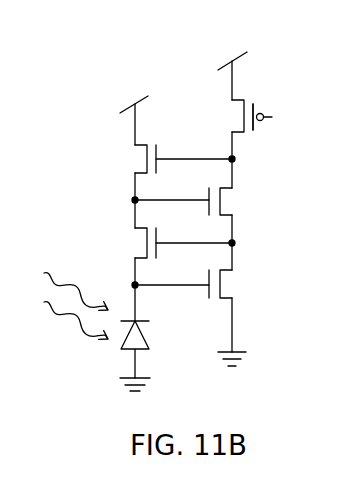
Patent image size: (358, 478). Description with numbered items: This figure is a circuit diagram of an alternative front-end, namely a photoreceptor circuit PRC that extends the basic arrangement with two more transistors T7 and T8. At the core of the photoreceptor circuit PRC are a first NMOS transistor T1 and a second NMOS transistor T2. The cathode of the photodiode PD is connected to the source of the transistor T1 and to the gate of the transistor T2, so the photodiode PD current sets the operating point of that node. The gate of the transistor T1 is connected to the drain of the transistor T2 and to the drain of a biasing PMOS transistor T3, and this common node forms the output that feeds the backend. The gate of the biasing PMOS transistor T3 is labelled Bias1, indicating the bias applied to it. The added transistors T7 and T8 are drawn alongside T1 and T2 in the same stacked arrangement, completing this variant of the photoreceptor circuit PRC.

The photoreceptor circuit PRC is at (122, 84).
The first NMOS transistor T1 is at (147, 155).
The second NMOS transistor T2 is at (220, 203).
The biasing PMOS transistor T3 is at (244, 119).
The transistor T7 is at (147, 247).
The transistor T8 is at (220, 290).
The first bias voltage Bias1 is at (288, 117).
The photodiode PD is at (143, 340).